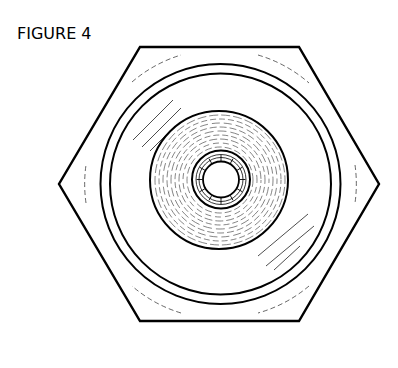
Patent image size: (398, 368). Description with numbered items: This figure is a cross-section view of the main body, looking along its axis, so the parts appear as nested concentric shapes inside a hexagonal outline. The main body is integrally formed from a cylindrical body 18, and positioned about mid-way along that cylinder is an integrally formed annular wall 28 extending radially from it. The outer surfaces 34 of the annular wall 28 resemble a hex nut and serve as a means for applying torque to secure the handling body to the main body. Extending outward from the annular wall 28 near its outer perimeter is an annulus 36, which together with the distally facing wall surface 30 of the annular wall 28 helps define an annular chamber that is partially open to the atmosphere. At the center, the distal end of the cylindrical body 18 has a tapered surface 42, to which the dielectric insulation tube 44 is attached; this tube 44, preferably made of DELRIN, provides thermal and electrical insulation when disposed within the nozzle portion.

The annular wall 28 is at (278, 43).
The outer surfaces 34 is at (93, 134).
The annulus 36 is at (284, 82).
The cylindrical body 18 is at (223, 181).
The distally facing wall surface 30 is at (221, 102).
The tapered surface 42 is at (273, 162).
The dielectric insulation tube 44 is at (226, 203).